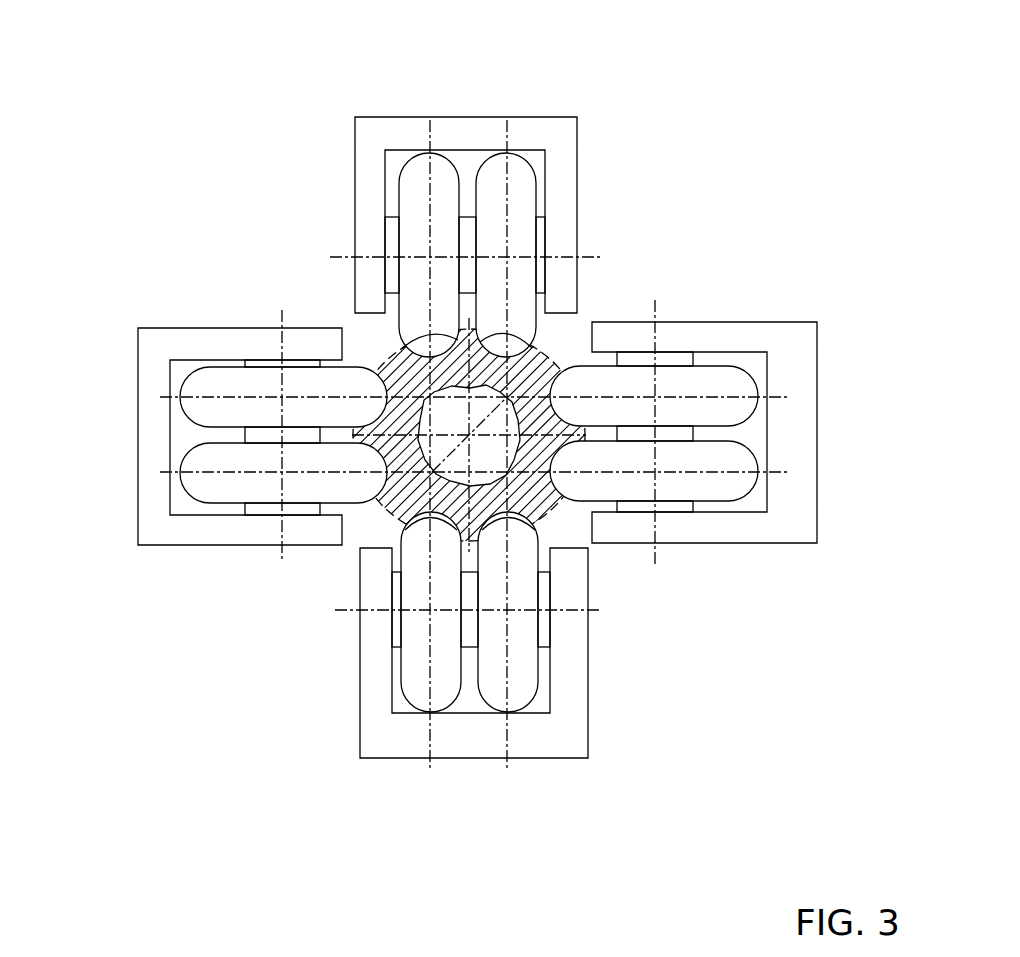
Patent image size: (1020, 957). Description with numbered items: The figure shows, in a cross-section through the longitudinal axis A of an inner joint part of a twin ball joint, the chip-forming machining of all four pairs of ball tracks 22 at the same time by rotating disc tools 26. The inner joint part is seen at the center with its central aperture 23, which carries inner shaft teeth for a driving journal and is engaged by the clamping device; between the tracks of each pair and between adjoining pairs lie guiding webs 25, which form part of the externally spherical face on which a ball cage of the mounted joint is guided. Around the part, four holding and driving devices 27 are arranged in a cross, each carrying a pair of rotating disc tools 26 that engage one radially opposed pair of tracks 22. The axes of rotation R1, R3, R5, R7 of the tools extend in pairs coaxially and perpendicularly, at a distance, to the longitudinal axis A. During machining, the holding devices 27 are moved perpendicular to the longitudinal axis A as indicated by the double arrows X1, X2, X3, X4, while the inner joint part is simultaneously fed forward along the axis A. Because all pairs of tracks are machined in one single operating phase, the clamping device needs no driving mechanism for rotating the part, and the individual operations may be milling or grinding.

The pairs of ball tracks 22 is at (507, 530).
The central aperture 23 is at (476, 435).
The guiding webs 25 is at (505, 332).
The rotating disc tools 26 is at (520, 777).
The holding devices and driving devices 27 is at (567, 167).
The axis of rotation R1 is at (587, 252).
The axis of rotation R3 is at (597, 612).
The axis of rotation R5 is at (655, 315).
The axis of rotation R7 is at (277, 320).
The double arrow X1 is at (483, 12).
The double arrow X2 is at (483, 800).
The double arrow X3 is at (908, 435).
The double arrow X4 is at (82, 435).
The longitudinal axis A is at (477, 435).